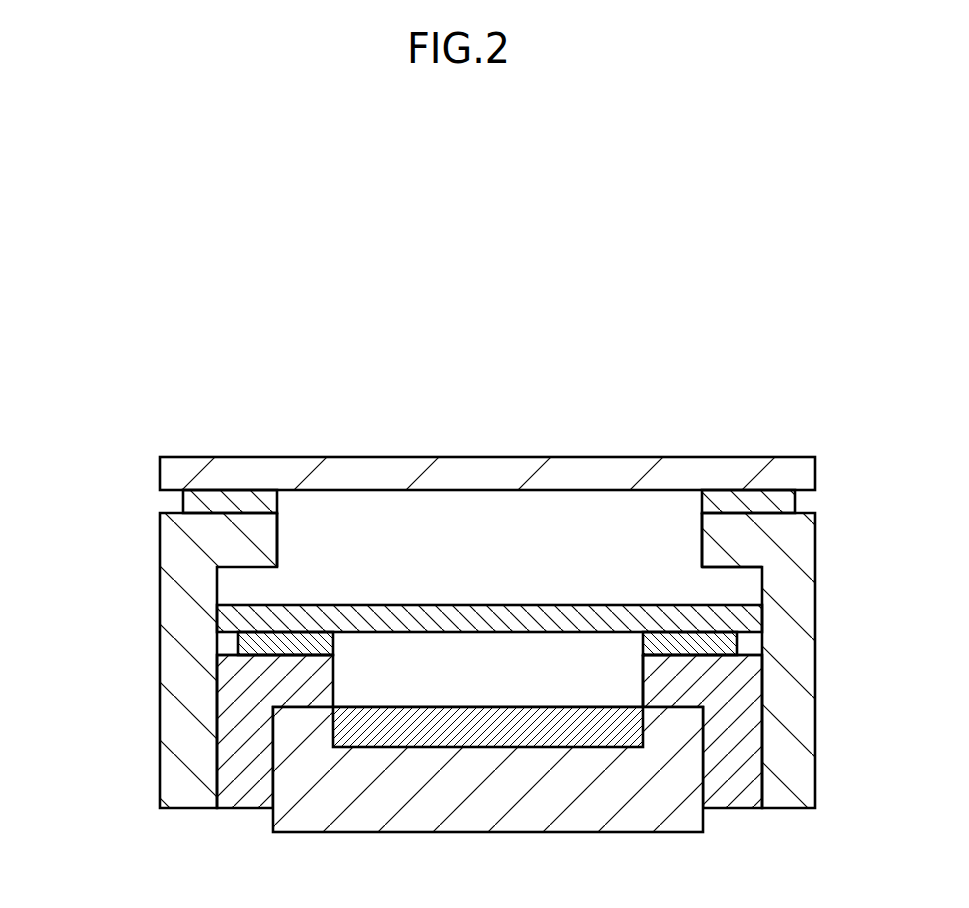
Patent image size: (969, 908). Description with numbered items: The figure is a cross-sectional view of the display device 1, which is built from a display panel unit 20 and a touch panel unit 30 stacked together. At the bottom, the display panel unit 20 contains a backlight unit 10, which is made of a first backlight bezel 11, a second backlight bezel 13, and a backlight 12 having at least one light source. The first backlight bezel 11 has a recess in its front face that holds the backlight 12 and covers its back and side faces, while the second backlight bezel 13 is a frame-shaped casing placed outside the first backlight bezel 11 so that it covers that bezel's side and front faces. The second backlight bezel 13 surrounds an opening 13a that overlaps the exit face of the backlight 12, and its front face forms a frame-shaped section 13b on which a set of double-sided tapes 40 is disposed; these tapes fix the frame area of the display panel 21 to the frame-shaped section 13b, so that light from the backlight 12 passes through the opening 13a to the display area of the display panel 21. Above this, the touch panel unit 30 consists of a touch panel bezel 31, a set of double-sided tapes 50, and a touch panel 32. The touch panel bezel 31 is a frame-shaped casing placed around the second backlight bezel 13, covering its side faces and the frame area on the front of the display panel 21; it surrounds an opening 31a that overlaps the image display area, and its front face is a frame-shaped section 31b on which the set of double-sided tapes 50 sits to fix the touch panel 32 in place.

The display device 1 is at (766, 332).
The backlight unit 10 is at (106, 717).
The first backlight bezel 11 is at (280, 818).
The backlight 12 is at (333, 733).
The second backlight bezel 13 is at (247, 702).
The opening 13a is at (632, 668).
The frame-shaped section 13b is at (313, 647).
The display panel unit 20 is at (56, 597).
The display panel 21 is at (245, 622).
The touch panel unit 30 is at (100, 455).
The touch panel bezel 31 is at (197, 547).
The opening 31a is at (693, 535).
The frame-shaped section 31b is at (280, 502).
The touch panel 32 is at (197, 477).
The set of double-sided tapes 40 is at (325, 647).
The set of double-sided tapes 50 is at (197, 503).